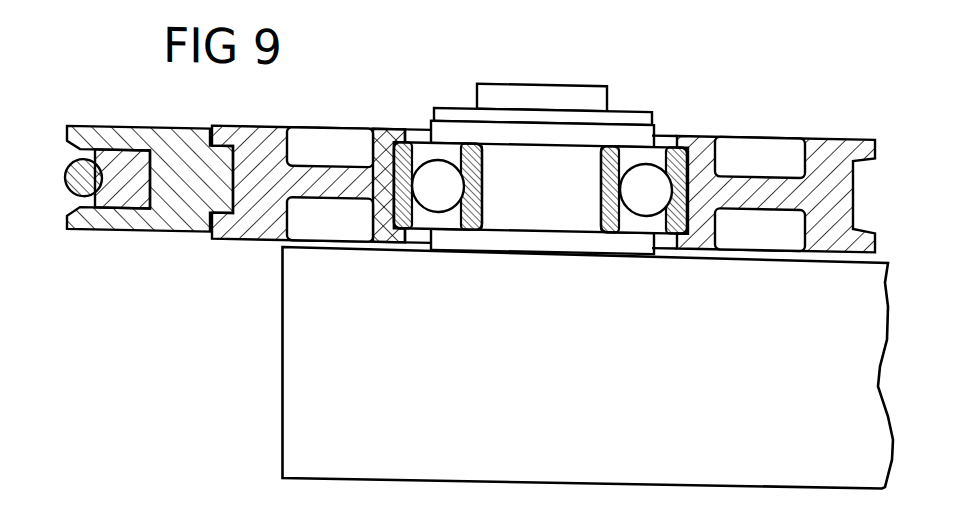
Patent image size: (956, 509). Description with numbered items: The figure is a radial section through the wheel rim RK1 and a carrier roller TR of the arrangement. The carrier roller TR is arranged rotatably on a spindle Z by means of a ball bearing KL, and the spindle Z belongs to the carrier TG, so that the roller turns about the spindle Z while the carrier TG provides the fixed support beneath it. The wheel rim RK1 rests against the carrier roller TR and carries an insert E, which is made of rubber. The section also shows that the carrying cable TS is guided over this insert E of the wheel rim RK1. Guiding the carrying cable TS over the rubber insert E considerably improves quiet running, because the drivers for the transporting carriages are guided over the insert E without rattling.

The carrying cable TS is at (67, 177).
The insert E is at (125, 200).
The wheel rim RK1 is at (183, 215).
The ball bearing KL is at (396, 126).
The spindle Z is at (585, 153).
The carrier roller TR is at (837, 146).
The carrier TG is at (325, 413).